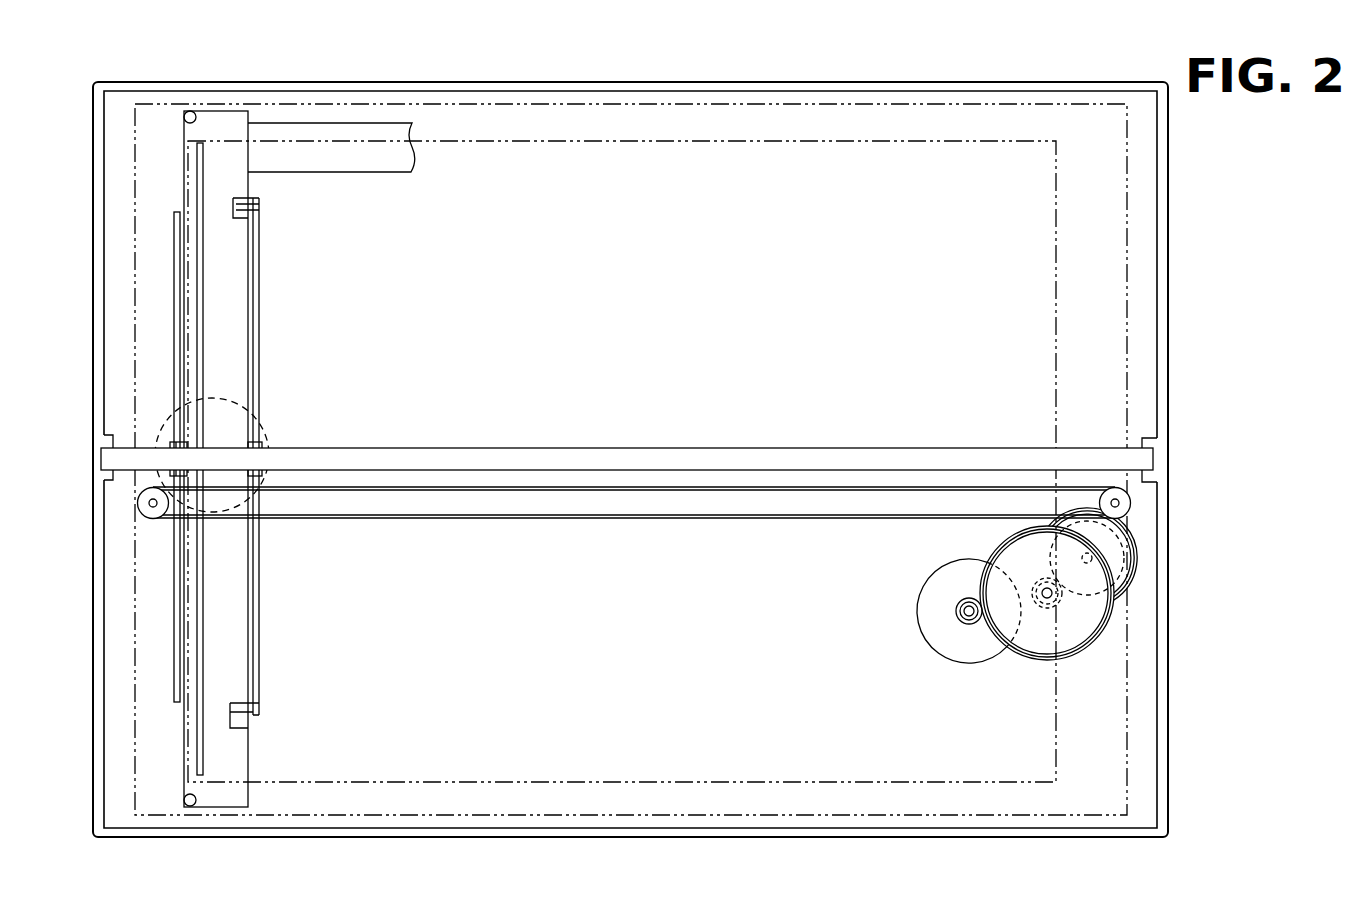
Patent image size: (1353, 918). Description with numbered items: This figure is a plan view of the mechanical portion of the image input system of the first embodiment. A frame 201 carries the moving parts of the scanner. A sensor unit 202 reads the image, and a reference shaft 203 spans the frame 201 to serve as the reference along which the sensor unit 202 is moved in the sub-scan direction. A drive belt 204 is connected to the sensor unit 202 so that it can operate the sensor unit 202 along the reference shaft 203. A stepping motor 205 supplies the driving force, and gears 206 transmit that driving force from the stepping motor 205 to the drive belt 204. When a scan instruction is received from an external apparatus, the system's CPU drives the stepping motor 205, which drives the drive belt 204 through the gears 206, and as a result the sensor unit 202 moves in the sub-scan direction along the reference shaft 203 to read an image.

The frame 201 is at (854, 82).
The sensor unit 202 is at (241, 342).
The reference shaft 203 is at (668, 447).
The drive belt 204 is at (668, 520).
The stepping motor 205 is at (942, 657).
The gears 206 is at (1089, 647).